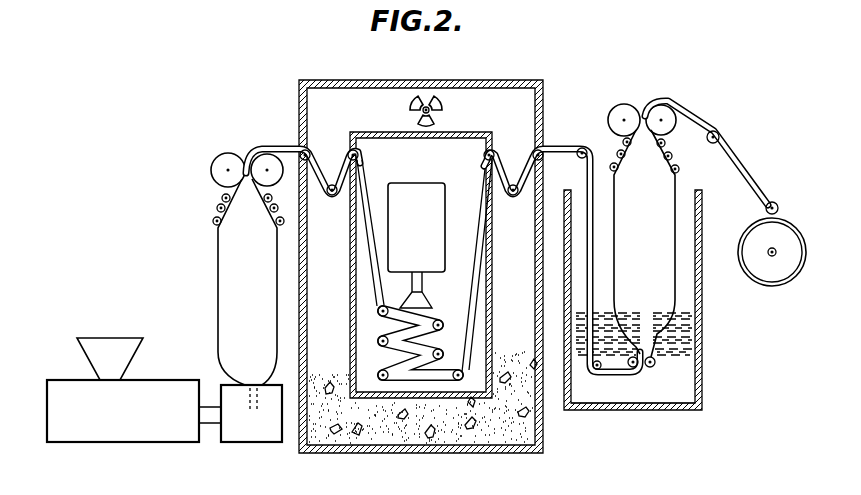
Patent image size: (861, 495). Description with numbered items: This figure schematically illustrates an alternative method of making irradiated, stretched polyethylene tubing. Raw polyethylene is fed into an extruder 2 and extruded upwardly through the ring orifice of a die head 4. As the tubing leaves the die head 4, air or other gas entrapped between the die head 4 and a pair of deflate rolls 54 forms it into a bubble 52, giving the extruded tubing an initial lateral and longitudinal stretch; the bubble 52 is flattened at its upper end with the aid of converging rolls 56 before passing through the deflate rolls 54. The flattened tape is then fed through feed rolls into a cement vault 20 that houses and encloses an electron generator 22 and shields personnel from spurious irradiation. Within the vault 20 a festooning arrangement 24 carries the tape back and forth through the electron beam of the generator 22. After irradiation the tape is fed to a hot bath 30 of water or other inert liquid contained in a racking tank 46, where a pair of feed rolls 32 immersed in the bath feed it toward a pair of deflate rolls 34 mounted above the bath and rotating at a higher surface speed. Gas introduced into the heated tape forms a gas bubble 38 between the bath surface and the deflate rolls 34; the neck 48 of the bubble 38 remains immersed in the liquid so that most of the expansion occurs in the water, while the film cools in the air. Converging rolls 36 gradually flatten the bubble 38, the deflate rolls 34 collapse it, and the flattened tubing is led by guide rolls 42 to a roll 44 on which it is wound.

The extruder 2 is at (120, 437).
The die head 4 is at (262, 438).
The vault 20 is at (432, 442).
The electron generator 22 is at (421, 188).
The festooning arrangement 24 is at (440, 322).
The hot bath 30 is at (700, 318).
The feed rolls 32 is at (656, 365).
The deflate rolls 34 is at (626, 117).
The converging rolls 36 is at (673, 153).
The gas bubble 38 is at (664, 224).
The guide rolls 42 is at (777, 201).
The roll 44 is at (773, 257).
The racking tank 46 is at (676, 408).
The neck 48 is at (648, 337).
The bubble 52 is at (222, 288).
The deflate rolls 54 is at (230, 167).
The converging rolls 56 is at (216, 208).